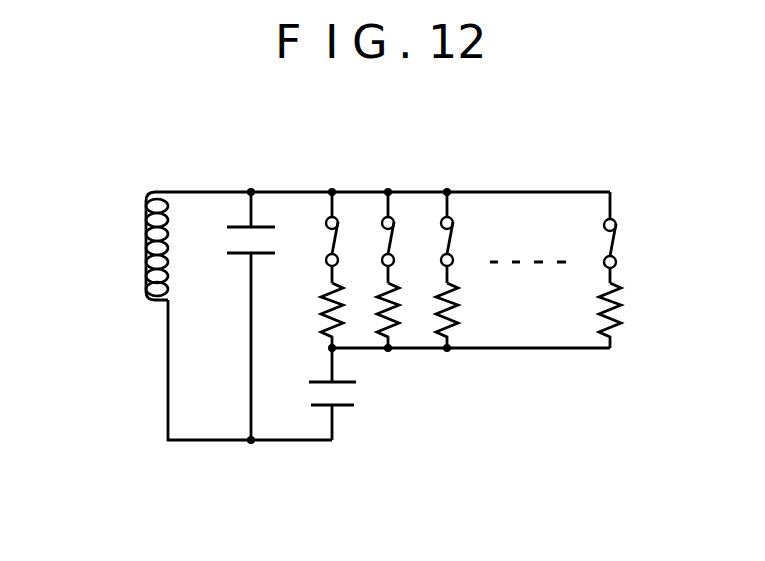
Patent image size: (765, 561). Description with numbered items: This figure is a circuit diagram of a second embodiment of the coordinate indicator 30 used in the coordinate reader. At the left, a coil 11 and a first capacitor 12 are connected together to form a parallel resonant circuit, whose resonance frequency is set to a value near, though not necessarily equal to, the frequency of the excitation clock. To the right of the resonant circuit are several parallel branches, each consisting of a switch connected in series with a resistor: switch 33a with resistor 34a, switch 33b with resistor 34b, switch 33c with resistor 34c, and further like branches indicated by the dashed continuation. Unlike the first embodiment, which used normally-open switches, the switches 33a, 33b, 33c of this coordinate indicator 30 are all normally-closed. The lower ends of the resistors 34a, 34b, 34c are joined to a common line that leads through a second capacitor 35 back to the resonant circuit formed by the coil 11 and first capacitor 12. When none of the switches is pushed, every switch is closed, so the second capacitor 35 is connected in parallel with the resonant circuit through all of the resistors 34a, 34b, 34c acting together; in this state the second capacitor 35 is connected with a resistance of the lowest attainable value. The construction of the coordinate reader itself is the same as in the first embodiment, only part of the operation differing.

The coordinate indicator 30 is at (137, 469).
The coil 11 is at (162, 200).
The first capacitor 12 is at (278, 235).
The switch 33a is at (337, 235).
The switch 33b is at (395, 235).
The switch 33c is at (452, 243).
The resistor 34a is at (347, 315).
The resistor 34b is at (405, 313).
The resistor 34c is at (468, 308).
The second capacitor 35 is at (353, 392).